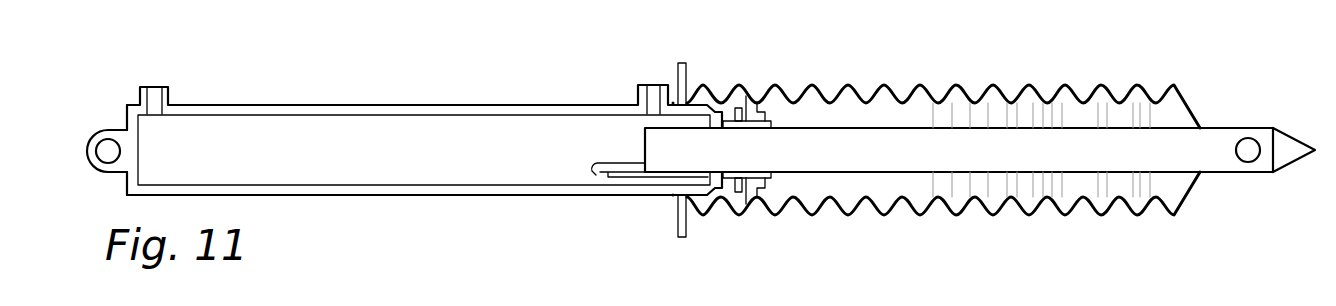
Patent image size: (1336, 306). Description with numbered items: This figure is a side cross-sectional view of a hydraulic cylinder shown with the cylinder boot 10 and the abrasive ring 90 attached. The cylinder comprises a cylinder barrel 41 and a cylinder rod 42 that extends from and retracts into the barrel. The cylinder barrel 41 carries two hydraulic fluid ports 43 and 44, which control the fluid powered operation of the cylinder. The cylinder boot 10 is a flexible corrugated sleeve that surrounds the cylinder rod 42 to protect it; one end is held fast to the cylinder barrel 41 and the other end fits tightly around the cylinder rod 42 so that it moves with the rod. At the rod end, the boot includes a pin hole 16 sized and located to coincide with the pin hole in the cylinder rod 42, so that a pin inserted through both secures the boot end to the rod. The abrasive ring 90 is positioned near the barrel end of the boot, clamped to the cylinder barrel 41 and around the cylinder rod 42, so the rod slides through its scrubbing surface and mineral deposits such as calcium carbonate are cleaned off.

The cylinder boot 10 is at (1003, 50).
The pin hole 16 is at (1232, 128).
The cylinder barrel 41 is at (406, 105).
The cylinder rod 42 is at (877, 152).
The hydraulic fluid port 43 is at (656, 85).
The hydraulic fluid port 44 is at (155, 86).
The abrasive ring 90 is at (752, 110).